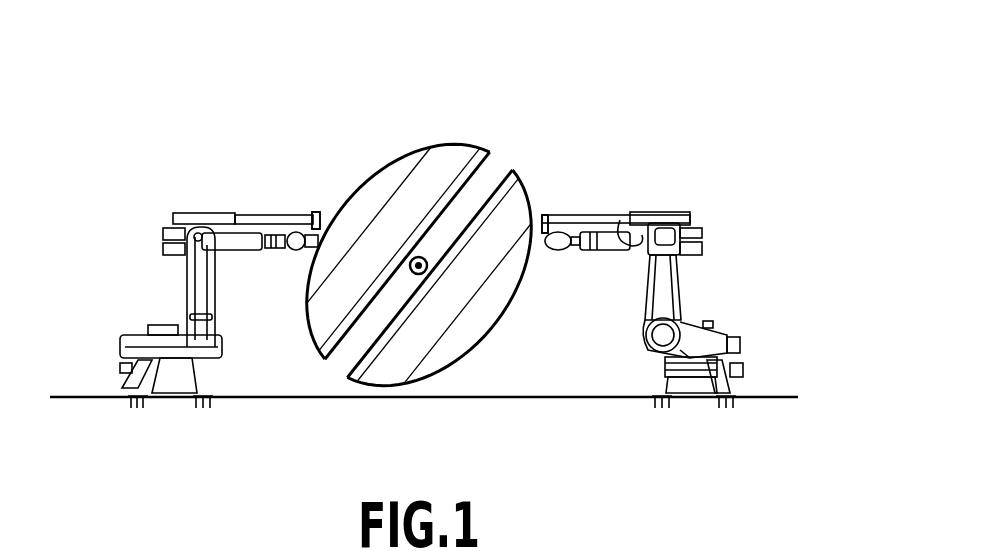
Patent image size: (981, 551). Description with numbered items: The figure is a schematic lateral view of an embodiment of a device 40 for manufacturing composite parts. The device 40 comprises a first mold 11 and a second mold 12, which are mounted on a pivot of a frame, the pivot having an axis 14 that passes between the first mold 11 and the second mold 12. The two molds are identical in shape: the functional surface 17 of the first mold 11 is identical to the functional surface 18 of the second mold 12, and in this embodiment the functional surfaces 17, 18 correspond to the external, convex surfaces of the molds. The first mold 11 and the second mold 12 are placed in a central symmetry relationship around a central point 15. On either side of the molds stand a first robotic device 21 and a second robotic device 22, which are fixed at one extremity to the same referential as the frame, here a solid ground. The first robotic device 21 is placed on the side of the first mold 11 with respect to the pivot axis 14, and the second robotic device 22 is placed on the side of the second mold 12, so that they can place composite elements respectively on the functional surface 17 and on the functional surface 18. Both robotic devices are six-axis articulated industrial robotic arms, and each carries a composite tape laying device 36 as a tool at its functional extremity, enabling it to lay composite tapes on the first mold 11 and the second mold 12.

The first mold 11 is at (390, 162).
The second mold 12 is at (513, 308).
The axis 14 is at (428, 258).
The central point 15 is at (427, 273).
The functional surface 17 is at (343, 205).
The functional surface 18 is at (453, 363).
The first robotic device 21 is at (173, 275).
The second robotic device 22 is at (713, 232).
The composite tape laying device 36 is at (318, 218).
The device 40 is at (552, 135).